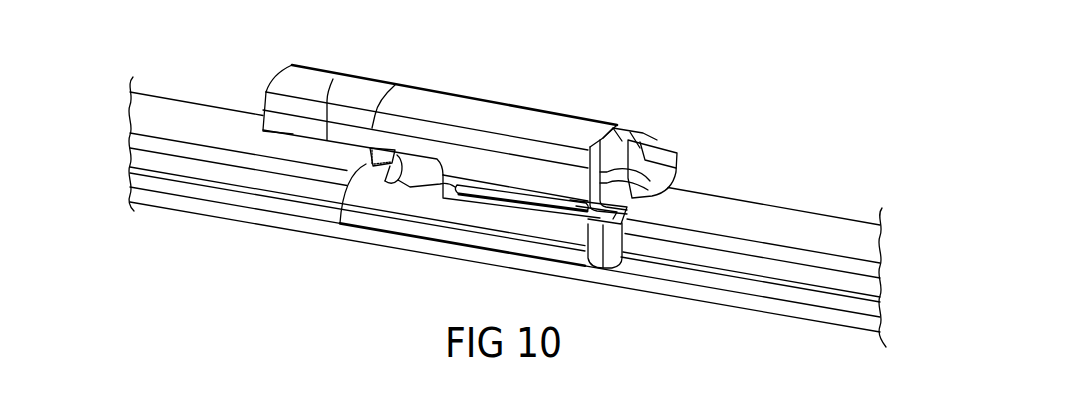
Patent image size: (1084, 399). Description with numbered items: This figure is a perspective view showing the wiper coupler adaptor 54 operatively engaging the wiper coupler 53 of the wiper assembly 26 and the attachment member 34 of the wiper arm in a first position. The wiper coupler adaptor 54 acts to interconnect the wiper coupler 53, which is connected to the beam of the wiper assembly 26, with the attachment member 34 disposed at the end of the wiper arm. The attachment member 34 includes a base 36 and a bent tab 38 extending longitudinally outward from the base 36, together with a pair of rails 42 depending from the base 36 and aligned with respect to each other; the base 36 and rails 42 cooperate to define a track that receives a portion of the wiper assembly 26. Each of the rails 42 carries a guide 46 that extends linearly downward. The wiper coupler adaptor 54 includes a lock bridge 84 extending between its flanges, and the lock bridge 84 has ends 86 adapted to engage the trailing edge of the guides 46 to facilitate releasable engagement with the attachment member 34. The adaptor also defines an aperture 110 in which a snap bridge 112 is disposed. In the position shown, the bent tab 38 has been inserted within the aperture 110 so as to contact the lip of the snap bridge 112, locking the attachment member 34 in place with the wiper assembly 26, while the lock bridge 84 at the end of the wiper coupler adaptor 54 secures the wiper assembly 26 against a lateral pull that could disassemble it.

The wiper assembly 26 is at (806, 209).
The attachment member 34 is at (361, 75).
The base 36 is at (480, 112).
The bent tab 38 is at (613, 135).
The rails 42 is at (453, 163).
The guide 46 is at (403, 158).
The wiper coupler 53 is at (615, 234).
The wiper coupler adaptor 54 is at (690, 128).
The lock bridge 84 is at (368, 153).
The ends 86 is at (382, 158).
The aperture 110 is at (622, 132).
The snap bridge 112 is at (648, 122).